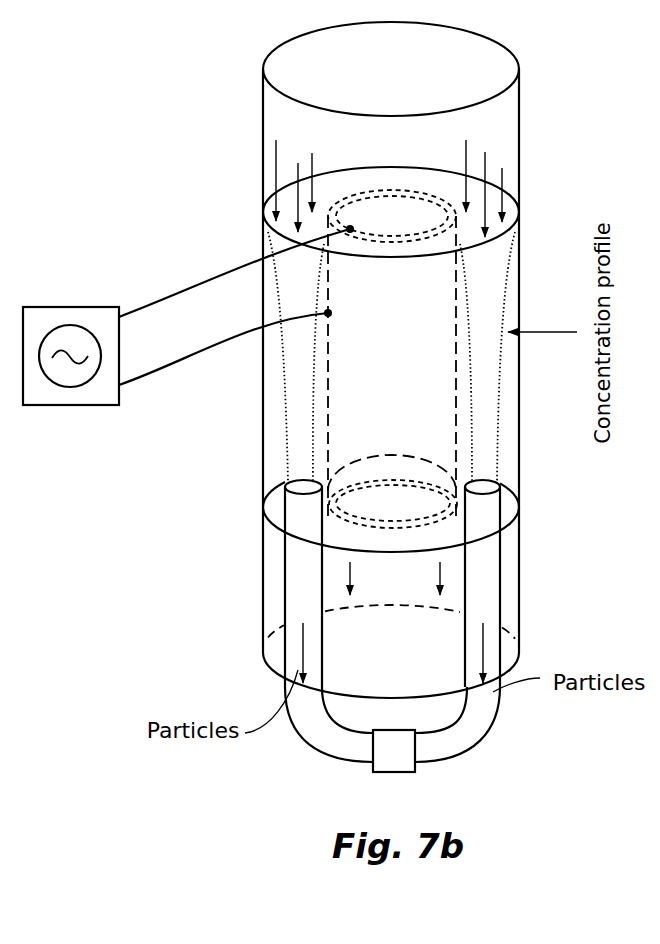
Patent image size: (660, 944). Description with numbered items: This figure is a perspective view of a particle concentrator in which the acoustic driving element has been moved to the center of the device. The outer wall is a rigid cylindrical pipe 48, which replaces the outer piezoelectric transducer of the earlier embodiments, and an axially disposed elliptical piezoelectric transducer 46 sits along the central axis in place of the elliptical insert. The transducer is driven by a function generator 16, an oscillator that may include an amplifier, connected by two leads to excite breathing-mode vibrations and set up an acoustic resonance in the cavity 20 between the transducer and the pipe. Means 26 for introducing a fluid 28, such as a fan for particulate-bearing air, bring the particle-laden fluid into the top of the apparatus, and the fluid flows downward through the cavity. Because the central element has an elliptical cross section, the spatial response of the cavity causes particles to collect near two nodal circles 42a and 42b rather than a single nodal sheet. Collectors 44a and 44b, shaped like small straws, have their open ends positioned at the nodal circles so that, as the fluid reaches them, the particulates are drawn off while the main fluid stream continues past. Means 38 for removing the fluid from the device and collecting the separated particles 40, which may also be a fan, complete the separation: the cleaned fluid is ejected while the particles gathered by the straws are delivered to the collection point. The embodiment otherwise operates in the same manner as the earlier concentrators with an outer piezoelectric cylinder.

The function generator 16 is at (72, 373).
The air-filled cavity 20 is at (322, 190).
The means for introducing a fluid 26 is at (261, 124).
The fluid 28 is at (405, 153).
The means for removing the fluid and collecting the separated particles 38 is at (262, 574).
The separated particles 40 is at (383, 761).
The nodal circle 42a is at (296, 488).
The nodal circle 42b is at (490, 486).
The collector 44a is at (283, 609).
The collector 44b is at (508, 592).
The elliptical piezoelectric transducer 46 is at (444, 196).
The rigid cylindrical pipe 48 is at (262, 361).